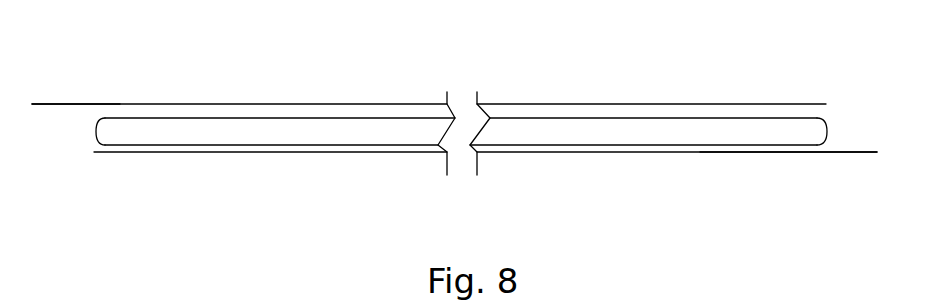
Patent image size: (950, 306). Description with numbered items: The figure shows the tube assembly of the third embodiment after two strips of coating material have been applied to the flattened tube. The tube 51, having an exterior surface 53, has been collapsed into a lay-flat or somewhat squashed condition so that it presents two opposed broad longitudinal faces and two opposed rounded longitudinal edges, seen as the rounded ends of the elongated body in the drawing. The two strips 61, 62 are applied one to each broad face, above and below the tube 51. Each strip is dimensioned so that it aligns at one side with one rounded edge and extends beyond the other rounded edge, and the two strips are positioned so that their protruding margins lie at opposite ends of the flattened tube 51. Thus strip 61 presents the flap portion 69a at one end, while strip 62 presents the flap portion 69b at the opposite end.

The tube 51 is at (590, 118).
The exterior surface 53 is at (550, 145).
The first strip 61 is at (260, 103).
The second strip 62 is at (267, 153).
The flap portion 69a is at (48, 103).
The flap portion 69b is at (865, 153).